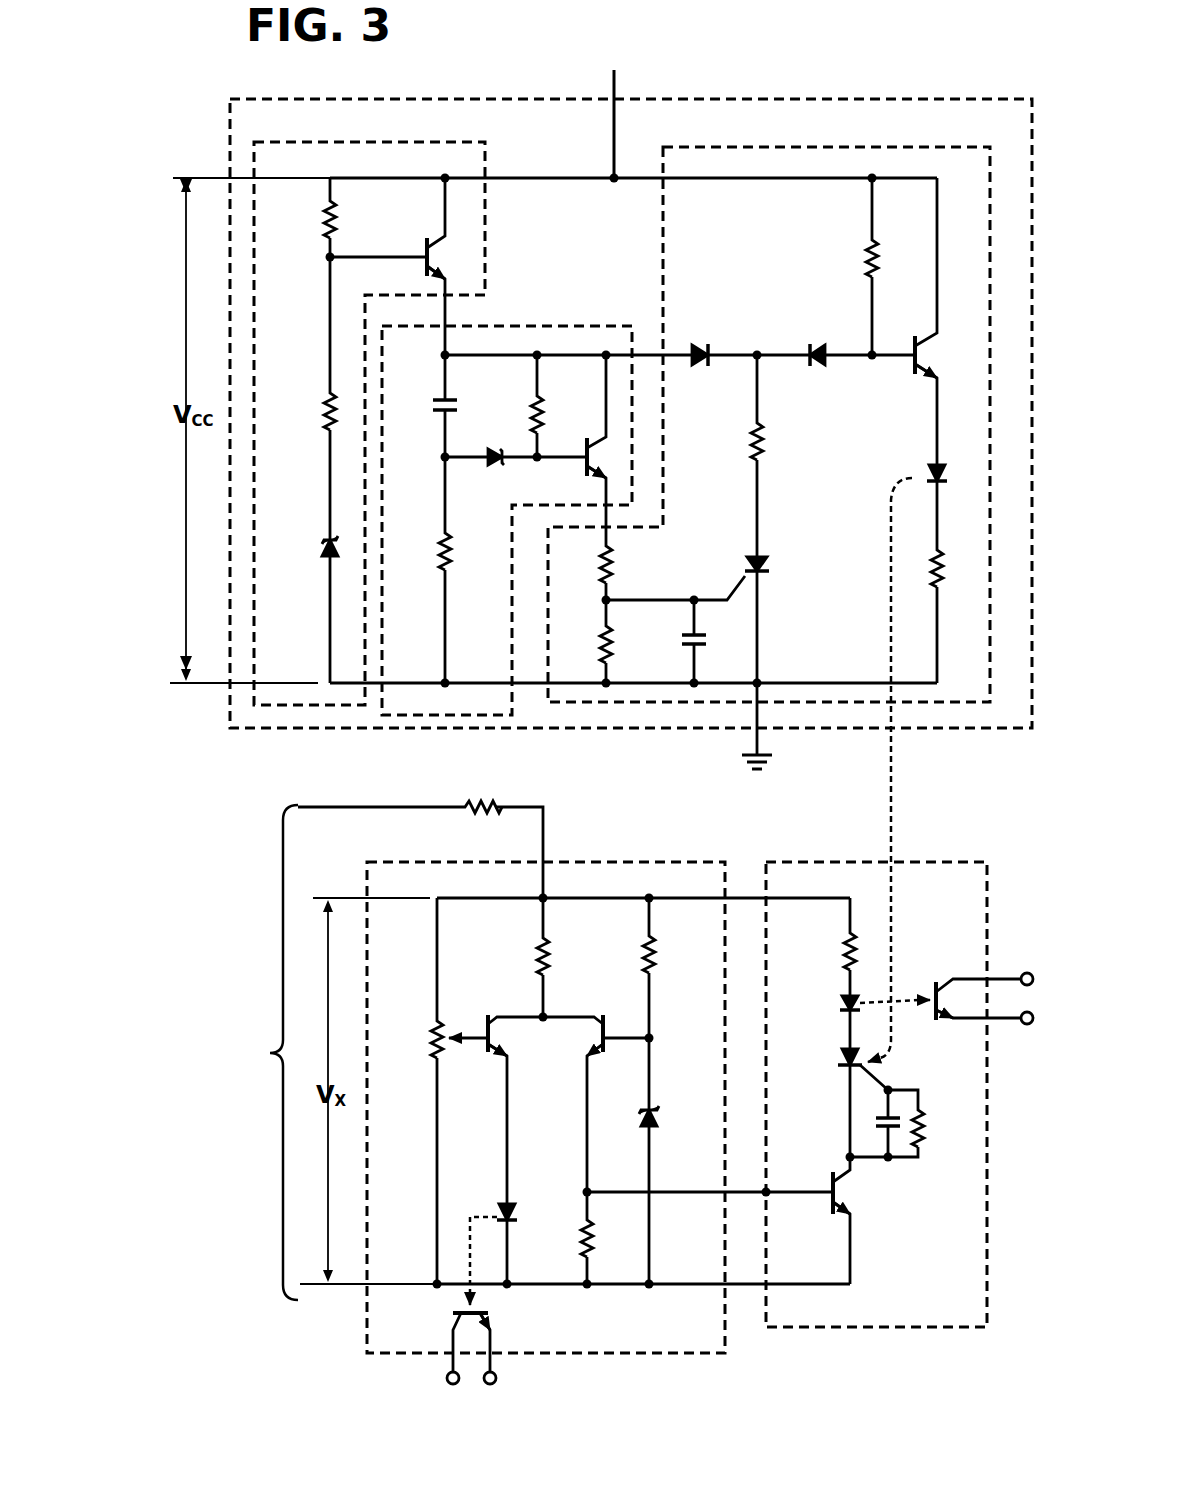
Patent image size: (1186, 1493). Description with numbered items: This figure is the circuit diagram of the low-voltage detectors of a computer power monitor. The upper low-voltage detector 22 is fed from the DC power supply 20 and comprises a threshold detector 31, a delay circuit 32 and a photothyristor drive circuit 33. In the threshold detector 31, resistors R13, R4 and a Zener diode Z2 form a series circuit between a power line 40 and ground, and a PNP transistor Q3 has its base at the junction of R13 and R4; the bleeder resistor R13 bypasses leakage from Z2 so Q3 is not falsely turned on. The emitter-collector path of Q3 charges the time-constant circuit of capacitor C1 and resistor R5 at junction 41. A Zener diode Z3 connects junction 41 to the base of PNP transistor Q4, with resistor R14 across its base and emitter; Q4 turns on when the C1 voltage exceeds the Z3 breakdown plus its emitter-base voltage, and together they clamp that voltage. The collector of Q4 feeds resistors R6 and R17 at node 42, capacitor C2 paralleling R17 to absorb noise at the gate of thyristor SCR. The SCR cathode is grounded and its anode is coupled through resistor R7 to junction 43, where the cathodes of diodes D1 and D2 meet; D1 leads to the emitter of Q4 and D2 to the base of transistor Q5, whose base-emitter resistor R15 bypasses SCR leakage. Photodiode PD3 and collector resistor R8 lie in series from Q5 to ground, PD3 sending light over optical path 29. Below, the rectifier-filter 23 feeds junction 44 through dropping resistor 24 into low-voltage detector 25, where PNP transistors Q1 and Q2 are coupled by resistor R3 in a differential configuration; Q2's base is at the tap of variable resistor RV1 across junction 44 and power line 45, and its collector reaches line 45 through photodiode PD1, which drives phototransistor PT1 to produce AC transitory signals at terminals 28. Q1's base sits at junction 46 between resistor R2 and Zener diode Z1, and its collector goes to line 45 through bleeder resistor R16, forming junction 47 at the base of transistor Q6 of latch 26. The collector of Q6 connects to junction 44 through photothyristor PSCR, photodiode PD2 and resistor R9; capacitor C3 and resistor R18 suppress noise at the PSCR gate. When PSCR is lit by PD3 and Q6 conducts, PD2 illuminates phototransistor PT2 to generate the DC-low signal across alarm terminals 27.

The DC power supply 20 is at (647, 109).
The low-voltage detector 22 is at (418, 98).
The rectifier-filter 23 is at (240, 1052).
The dropping resistor 24 is at (483, 805).
The low-voltage detector 25 is at (606, 862).
The latch 26 is at (802, 862).
The alarm terminals 27 is at (1022, 1013).
The alarm terminals 28 is at (458, 1386).
The optical path 29 is at (892, 828).
The threshold detector 31 is at (392, 141).
The delay circuit 32 is at (512, 326).
The photothyristor drive circuit 33 is at (663, 232).
The power line 40 is at (530, 178).
The junction 41 is at (440, 457).
The junction node 42 is at (604, 601).
The junction 43 is at (755, 358).
The junction 44 is at (548, 898).
The power line 45 is at (322, 1287).
The junction 46 is at (653, 1040).
The junction 47 is at (585, 1191).
The bleeder resistor R13 is at (328, 215).
The resistor R4 is at (327, 406).
The Zener diode Z2 is at (325, 555).
The PNP transistor Q3 is at (424, 250).
The capacitor C1 is at (450, 403).
The resistor R14 is at (545, 408).
The Zener diode Z3 is at (492, 470).
The PNP transistor Q4 is at (583, 470).
The resistor R5 is at (448, 555).
The resistor R6 is at (612, 566).
The resistor R17 is at (612, 641).
The capacitor C2 is at (690, 648).
The thyristor SCR is at (764, 559).
The resistor R7 is at (764, 439).
The diode D1 is at (700, 347).
The diode D2 is at (813, 347).
The resistor R15 is at (868, 256).
The transistor Q5 is at (908, 367).
The photodiode PD3 is at (925, 468).
The collector resistor R8 is at (942, 576).
The variable resistor RV1 is at (432, 1036).
The resistor R3 is at (540, 946).
The resistor R2 is at (645, 951).
The PNP transistor Q1 is at (597, 1043).
The PNP transistor Q2 is at (487, 1054).
The Zener diode Z1 is at (660, 1126).
The photodiode PD1 is at (497, 1209).
The bleeder resistor R16 is at (583, 1229).
The phototransistor PT1 is at (491, 1306).
The resistor R9 is at (845, 949).
The photodiode PD2 is at (842, 1003).
The photothyristor PSCR is at (846, 1069).
The capacitor C3 is at (870, 1122).
The resistor R18 is at (926, 1118).
The transistor Q6 is at (826, 1198).
The phototransistor PT2 is at (933, 988).